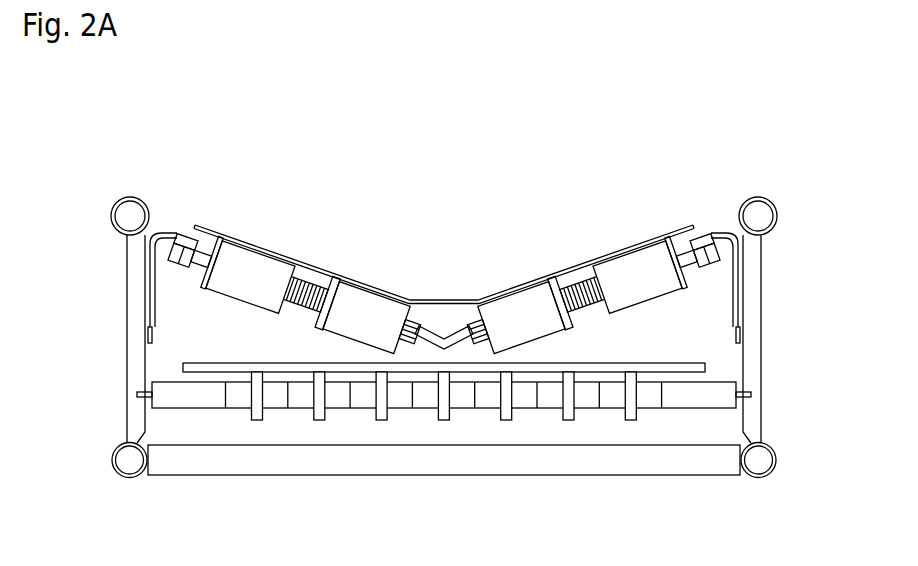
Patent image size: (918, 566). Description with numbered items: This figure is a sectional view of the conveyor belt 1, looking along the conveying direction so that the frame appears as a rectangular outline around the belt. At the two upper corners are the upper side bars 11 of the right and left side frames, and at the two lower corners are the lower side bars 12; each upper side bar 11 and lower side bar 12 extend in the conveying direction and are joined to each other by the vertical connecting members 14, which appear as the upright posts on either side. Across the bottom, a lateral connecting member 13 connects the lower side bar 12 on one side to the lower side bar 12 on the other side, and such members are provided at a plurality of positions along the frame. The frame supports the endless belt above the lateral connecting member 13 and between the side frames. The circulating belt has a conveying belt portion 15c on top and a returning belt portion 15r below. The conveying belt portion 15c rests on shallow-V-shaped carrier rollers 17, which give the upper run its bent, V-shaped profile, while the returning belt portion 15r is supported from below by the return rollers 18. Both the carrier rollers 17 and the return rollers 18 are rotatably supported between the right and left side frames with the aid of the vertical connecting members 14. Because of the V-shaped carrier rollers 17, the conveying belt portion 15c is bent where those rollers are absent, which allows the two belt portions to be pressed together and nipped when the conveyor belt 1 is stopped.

The conveyor belt 1 is at (760, 133).
The upper side bar 11 is at (111, 215).
The lower side bar 12 is at (112, 460).
The lateral connecting member 13 is at (380, 477).
The vertical connecting member 14 is at (127, 334).
The conveying belt portion 15c is at (328, 266).
The returning belt portion 15r is at (223, 360).
The carrier roller 17 is at (528, 305).
The return roller 18 is at (460, 400).